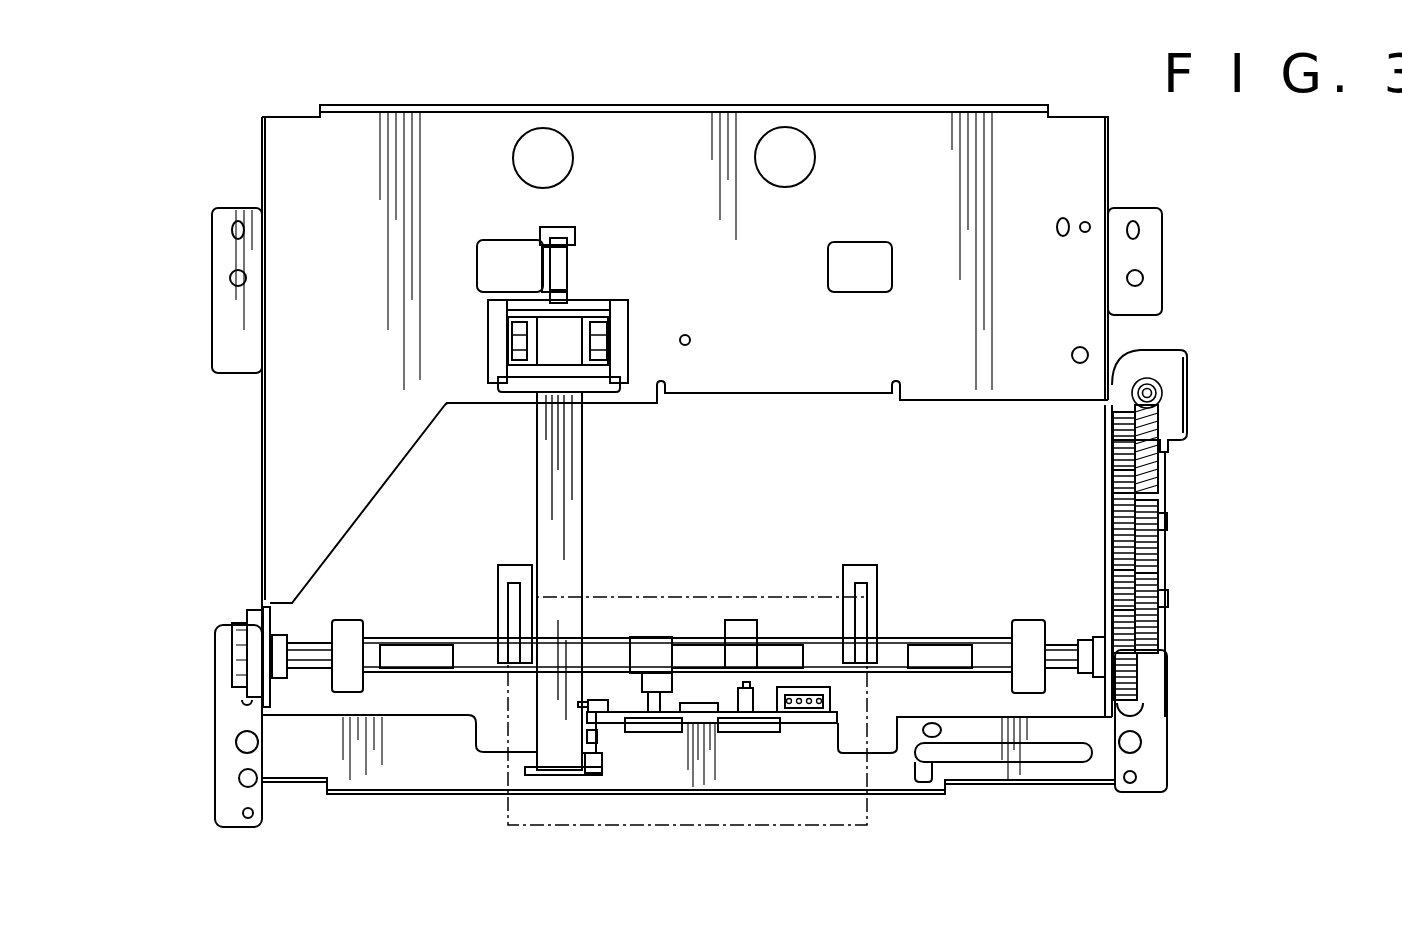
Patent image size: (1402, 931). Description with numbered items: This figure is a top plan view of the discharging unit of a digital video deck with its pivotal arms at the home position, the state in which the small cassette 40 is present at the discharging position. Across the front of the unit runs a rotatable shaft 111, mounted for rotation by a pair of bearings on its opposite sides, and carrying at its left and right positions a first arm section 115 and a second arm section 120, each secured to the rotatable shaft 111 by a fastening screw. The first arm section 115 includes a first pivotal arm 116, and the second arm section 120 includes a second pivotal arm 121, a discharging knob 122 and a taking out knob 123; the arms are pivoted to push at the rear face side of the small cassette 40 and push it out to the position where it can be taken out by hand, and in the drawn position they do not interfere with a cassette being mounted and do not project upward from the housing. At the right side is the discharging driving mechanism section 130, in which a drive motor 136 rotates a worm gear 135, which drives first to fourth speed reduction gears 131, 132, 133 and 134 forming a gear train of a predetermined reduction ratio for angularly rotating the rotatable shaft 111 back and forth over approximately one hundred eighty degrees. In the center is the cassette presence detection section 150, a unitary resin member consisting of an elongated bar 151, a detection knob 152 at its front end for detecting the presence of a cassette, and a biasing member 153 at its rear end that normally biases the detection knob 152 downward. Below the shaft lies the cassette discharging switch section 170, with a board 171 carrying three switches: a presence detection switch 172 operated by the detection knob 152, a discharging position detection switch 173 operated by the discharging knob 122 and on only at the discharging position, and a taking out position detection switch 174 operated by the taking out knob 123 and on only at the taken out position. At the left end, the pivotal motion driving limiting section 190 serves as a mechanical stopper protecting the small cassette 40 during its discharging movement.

The small cassette 40 is at (528, 818).
The rotatable shaft 111 is at (1065, 653).
The first arm section 115 is at (422, 633).
The first pivotal arm 116 is at (508, 565).
The second arm section 120 is at (942, 636).
The second pivotal arm 121 is at (860, 565).
The discharging knob 122 is at (652, 636).
The taking out knob 123 is at (740, 620).
The discharging driving mechanism section 130 is at (1205, 500).
The first speed reduction gear 131 is at (1158, 473).
The second speed reduction gear 132 is at (1165, 522).
The third speed reduction gear 133 is at (1158, 617).
The fourth speed reduction gear 134 is at (1137, 673).
The worm gear 135 is at (1152, 380).
The drive motor 136 is at (1177, 382).
The cassette presence detection section 150 is at (531, 485).
The elongated bar 151 is at (580, 523).
The detection knob 152 is at (547, 733).
The biasing member 153 is at (567, 262).
The cassette discharging switch section 170 is at (783, 750).
The board 171 is at (810, 701).
The presence detection switch 172 is at (600, 712).
The discharging position detection switch 173 is at (655, 712).
The taking out position detection switch 174 is at (747, 712).
The pivotal motion driving limiting section 190 is at (211, 690).